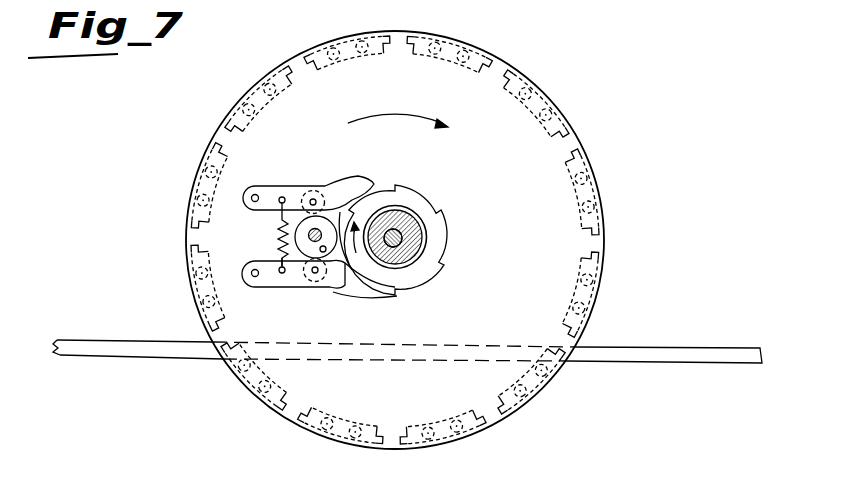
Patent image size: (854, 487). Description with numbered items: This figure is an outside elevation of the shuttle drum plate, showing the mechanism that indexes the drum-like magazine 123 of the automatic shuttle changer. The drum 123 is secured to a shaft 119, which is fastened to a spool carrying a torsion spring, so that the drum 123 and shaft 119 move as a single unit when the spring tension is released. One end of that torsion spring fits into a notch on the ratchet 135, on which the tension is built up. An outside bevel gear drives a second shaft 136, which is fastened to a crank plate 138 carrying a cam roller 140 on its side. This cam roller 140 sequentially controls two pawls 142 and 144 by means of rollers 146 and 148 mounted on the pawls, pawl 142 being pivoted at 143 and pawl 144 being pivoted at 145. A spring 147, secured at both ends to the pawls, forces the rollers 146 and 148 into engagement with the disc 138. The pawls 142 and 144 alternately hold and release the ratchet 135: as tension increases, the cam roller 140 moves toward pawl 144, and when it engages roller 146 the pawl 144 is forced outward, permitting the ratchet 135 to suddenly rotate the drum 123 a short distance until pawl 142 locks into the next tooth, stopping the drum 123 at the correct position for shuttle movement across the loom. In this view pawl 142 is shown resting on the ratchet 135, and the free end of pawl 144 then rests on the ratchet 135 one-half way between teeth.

The shaft 119 is at (408, 226).
The drum-like magazine 123 is at (543, 143).
The ratchet 135 is at (436, 222).
The shaft 136 is at (309, 235).
The crank plate 138 is at (284, 250).
The cam roller 140 is at (320, 273).
The pawl 142 is at (348, 183).
The pivot 143 is at (255, 195).
The pawl 144 is at (295, 285).
The pivot 145 is at (255, 276).
The roller 146 is at (320, 286).
The spring 147 is at (278, 236).
The roller 148 is at (313, 199).